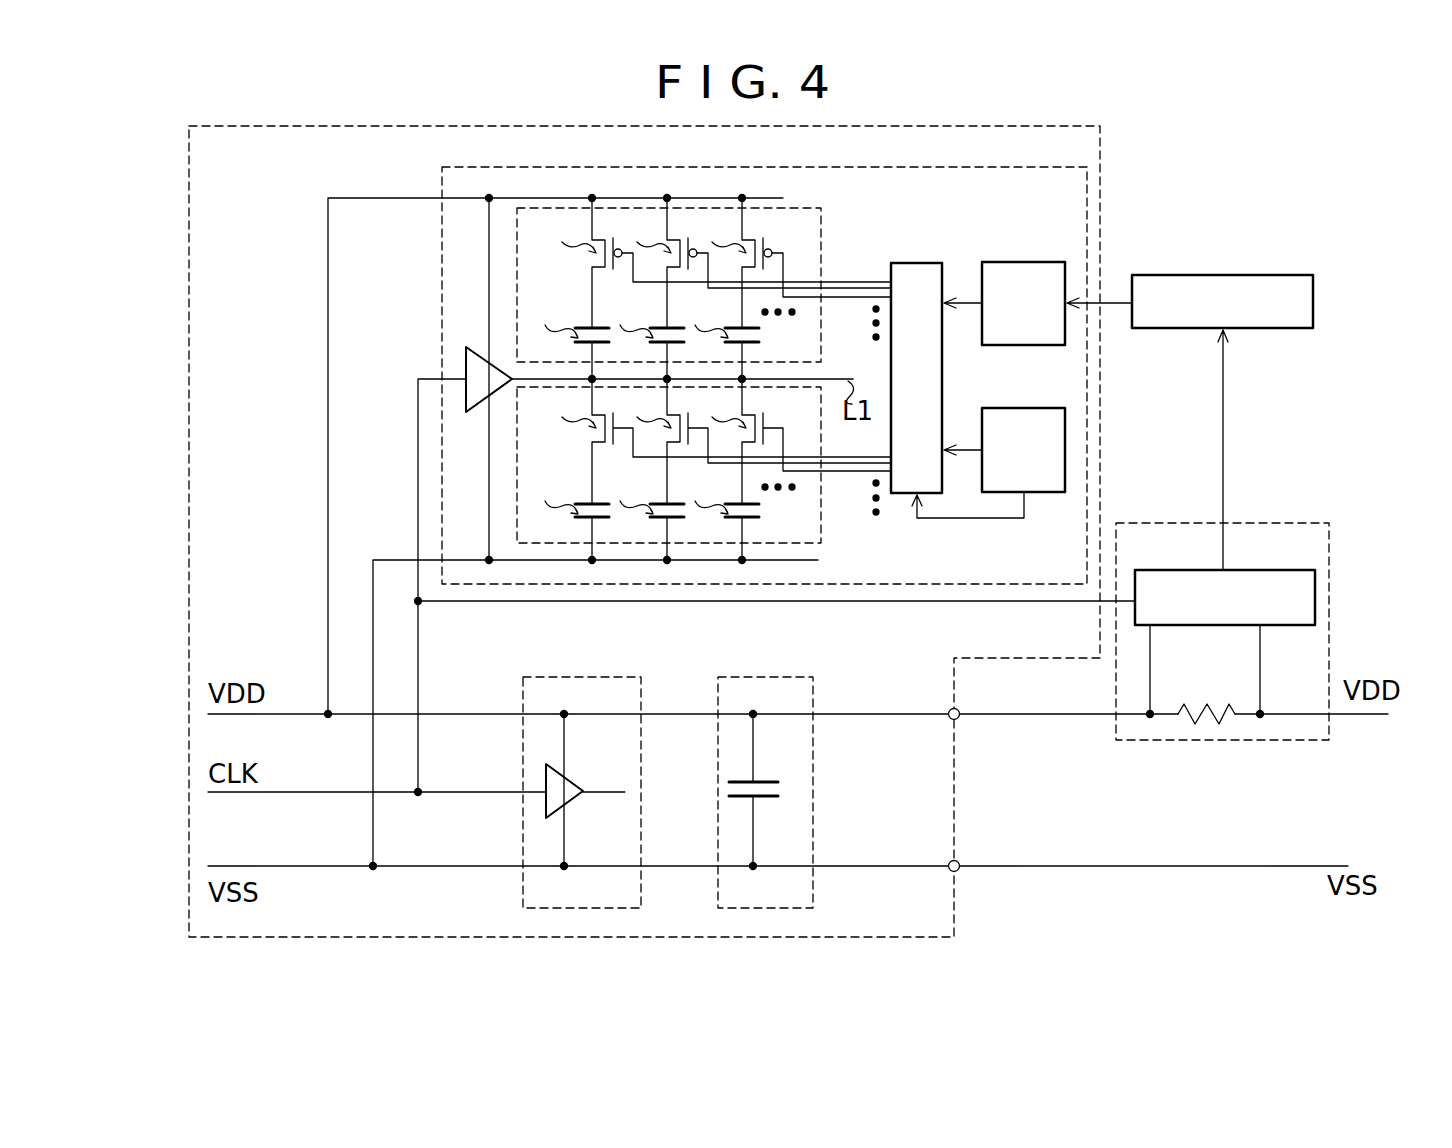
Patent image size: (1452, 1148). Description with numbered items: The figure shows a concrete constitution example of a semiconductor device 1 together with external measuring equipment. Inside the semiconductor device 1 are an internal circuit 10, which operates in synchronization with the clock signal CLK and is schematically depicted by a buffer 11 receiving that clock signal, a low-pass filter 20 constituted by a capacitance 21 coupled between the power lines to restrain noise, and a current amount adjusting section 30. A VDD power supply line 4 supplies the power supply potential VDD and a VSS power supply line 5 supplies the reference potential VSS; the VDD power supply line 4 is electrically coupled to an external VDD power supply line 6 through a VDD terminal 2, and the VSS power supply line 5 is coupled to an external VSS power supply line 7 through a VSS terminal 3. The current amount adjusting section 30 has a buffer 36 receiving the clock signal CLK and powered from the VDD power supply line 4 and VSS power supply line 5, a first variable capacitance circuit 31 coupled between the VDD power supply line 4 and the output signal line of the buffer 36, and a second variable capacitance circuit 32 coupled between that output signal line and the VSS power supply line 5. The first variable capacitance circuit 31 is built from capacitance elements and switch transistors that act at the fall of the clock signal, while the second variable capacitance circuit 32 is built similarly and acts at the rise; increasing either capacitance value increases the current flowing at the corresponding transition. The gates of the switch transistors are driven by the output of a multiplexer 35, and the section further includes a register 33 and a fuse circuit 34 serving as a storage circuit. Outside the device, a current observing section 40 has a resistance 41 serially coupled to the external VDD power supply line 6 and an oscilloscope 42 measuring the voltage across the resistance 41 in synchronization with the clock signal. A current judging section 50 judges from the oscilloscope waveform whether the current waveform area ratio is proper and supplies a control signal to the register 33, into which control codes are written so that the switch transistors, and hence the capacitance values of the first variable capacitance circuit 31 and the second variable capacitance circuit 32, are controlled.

The semiconductor device 1 is at (935, 127).
The VDD terminal 2 is at (959, 719).
The VSS terminal 3 is at (959, 861).
The VDD power supply line 4 is at (305, 716).
The VSS power supply line 5 is at (330, 868).
The VDD power supply line of the outside 6 is at (1070, 716).
The VSS power supply line of the outside 7 is at (1098, 868).
The internal circuit 10 is at (590, 677).
The buffer 11 is at (583, 776).
The low-pass filter 20 is at (765, 677).
The capacitance 21 is at (770, 776).
The current amount adjusting section 30 is at (612, 167).
The first variable capacitance circuit 31 is at (823, 213).
The second variable capacitance circuit 32 is at (821, 533).
The register 33 is at (1000, 262).
The fuse circuit 34 is at (1000, 408).
The multiplexer 35 is at (917, 262).
The buffer 36 is at (466, 350).
The current observing section 40 is at (1329, 530).
The resistance 41 is at (1195, 720).
The oscilloscope 42 is at (1315, 593).
The current judging section 50 is at (1313, 297).